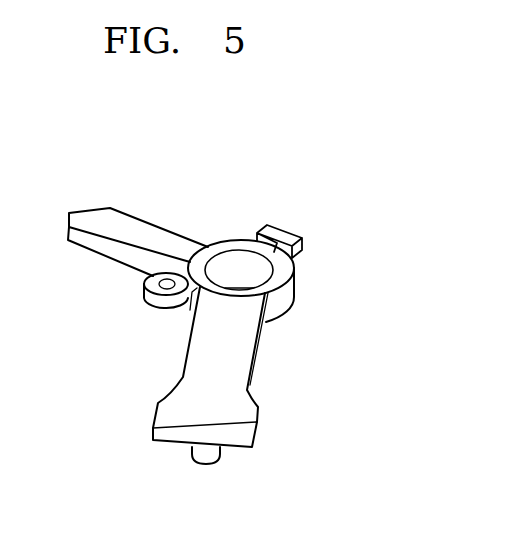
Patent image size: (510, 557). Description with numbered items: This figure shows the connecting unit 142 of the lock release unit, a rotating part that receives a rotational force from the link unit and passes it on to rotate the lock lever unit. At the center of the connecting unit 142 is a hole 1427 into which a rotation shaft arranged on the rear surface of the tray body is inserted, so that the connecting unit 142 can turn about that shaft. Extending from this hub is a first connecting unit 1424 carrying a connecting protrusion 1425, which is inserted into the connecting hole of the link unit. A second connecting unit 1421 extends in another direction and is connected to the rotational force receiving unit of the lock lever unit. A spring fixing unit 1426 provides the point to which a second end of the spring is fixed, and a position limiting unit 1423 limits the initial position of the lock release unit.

The connecting unit 142 is at (236, 343).
The second connecting unit 1421 is at (95, 214).
The position limiting unit 1423 is at (273, 231).
The first connecting unit 1424 is at (188, 385).
The connecting protrusion 1425 is at (203, 458).
The spring fixing unit 1426 is at (143, 282).
The hole 1427 is at (233, 260).